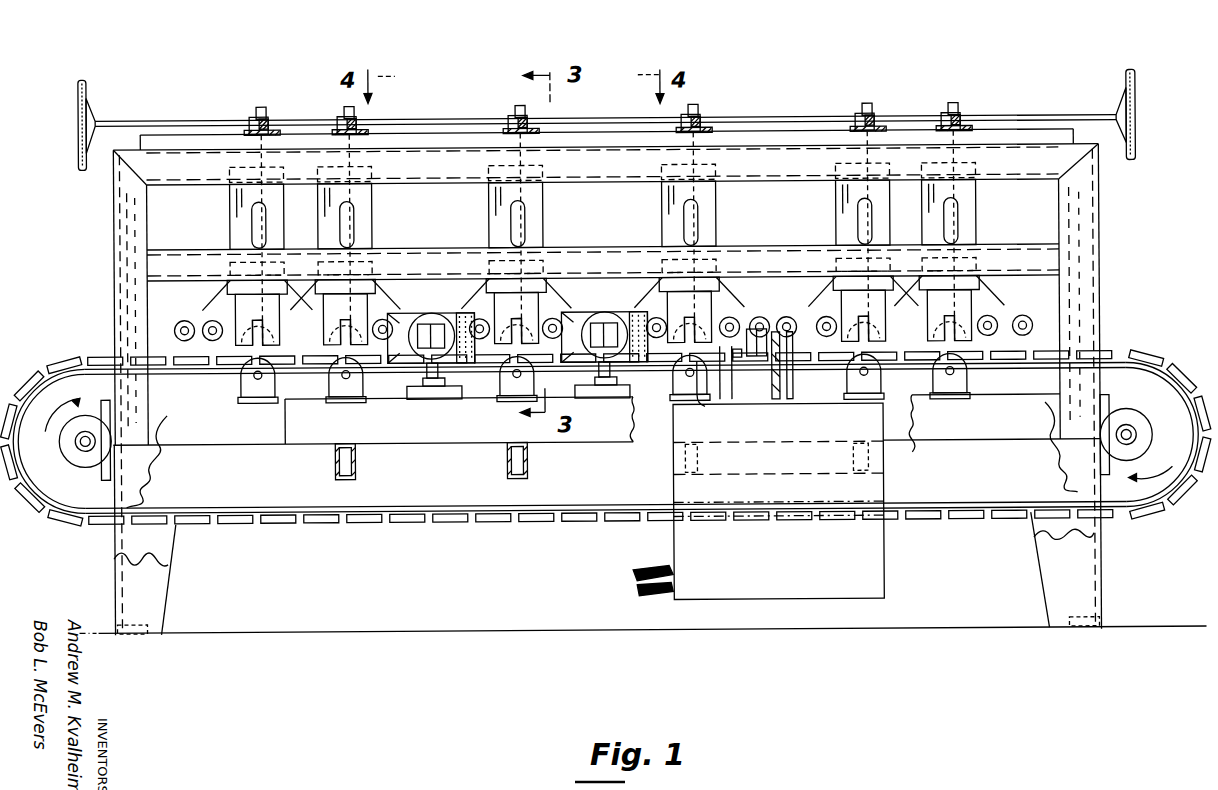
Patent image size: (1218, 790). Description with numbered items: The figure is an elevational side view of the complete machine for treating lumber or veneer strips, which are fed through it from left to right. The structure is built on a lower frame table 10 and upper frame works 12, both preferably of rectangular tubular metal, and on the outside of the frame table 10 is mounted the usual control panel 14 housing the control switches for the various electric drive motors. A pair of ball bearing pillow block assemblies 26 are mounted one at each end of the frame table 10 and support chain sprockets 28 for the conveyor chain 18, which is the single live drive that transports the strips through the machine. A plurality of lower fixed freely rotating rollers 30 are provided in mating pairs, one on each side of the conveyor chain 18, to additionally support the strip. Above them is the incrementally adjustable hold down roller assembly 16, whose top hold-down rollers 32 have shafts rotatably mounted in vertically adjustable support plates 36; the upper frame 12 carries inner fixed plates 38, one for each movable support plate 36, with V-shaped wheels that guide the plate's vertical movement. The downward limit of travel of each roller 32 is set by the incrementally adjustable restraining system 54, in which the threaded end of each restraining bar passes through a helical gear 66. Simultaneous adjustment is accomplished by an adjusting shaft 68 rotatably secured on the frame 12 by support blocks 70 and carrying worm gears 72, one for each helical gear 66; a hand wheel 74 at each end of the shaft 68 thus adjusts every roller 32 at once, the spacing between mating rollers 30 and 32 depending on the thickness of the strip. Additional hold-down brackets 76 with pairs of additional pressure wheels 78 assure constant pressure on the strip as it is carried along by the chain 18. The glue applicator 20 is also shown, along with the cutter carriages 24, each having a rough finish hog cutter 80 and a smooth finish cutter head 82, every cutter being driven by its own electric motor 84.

The lower frame table 10 is at (127, 533).
The upper frame works 12 is at (128, 258).
The control panel 14 is at (770, 556).
The incrementally adjustable hold down roller assembly 16 is at (74, 118).
The conveyor chain 18 is at (42, 376).
The glue applicator 20 is at (760, 403).
The cutter carriage 24 is at (443, 430).
The ball bearing pillow block assembly 26 is at (78, 442).
The chain sprocket 28 is at (1167, 388).
The lower fixed freely rotating roller 30 is at (328, 385).
The top hold-down roller 32 is at (326, 325).
The vertically adjustable support plate 36 is at (250, 342).
The inner fixed plate 38 is at (245, 203).
The incrementally adjustable restraining system 54 is at (754, 102).
The helical gear 66 is at (347, 118).
The adjusting shaft 68 is at (193, 118).
The support block 70 is at (257, 117).
The worm gear 72 is at (270, 133).
The hand wheel 74 is at (80, 145).
The additional hold-down bracket 76 is at (462, 296).
The additional pressure wheel 78 is at (200, 320).
The rough finish hog cutter 80 is at (417, 352).
The smooth finish cutter head 82 is at (618, 362).
The electric motor 84 is at (425, 398).